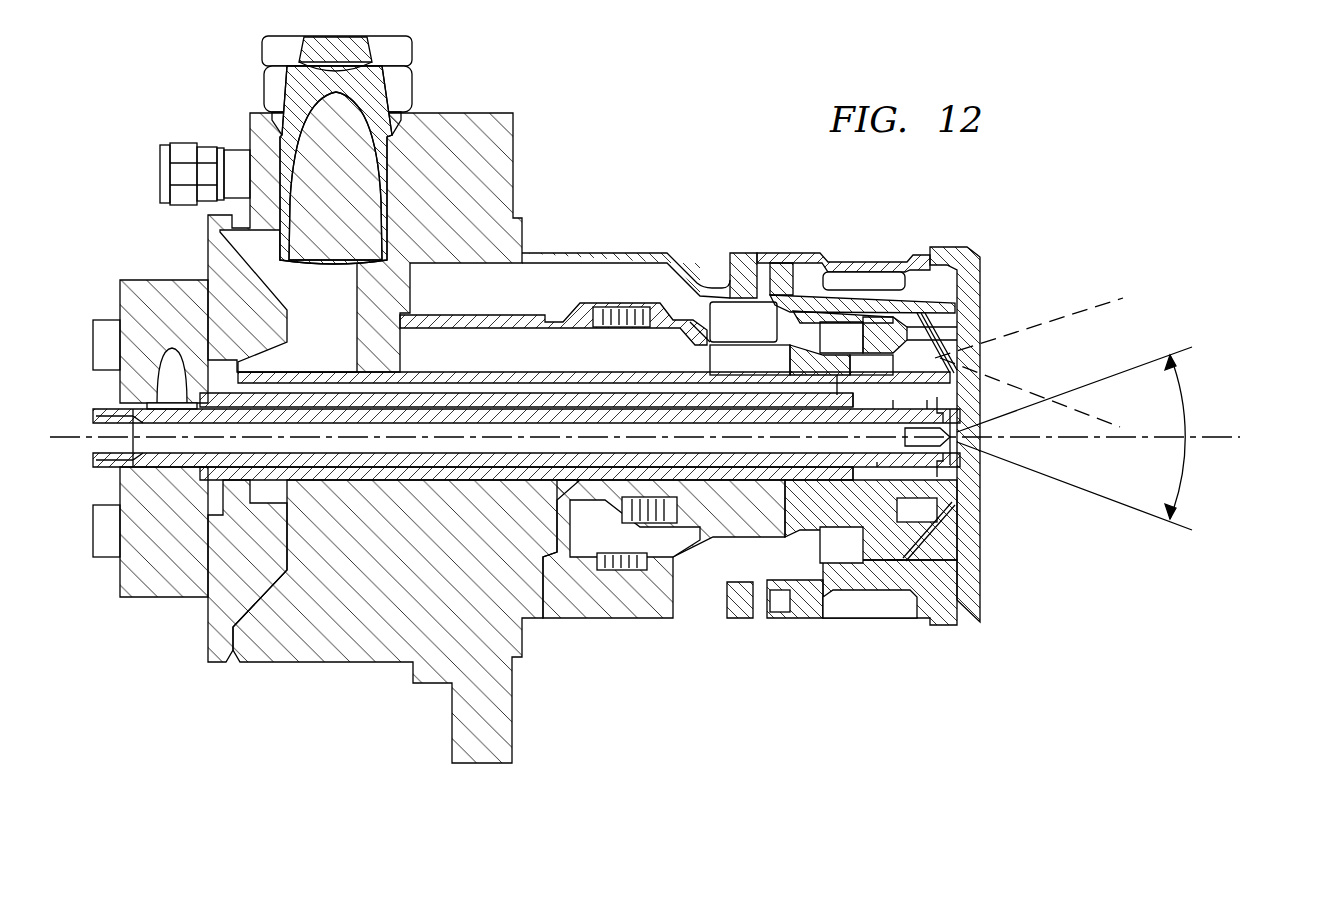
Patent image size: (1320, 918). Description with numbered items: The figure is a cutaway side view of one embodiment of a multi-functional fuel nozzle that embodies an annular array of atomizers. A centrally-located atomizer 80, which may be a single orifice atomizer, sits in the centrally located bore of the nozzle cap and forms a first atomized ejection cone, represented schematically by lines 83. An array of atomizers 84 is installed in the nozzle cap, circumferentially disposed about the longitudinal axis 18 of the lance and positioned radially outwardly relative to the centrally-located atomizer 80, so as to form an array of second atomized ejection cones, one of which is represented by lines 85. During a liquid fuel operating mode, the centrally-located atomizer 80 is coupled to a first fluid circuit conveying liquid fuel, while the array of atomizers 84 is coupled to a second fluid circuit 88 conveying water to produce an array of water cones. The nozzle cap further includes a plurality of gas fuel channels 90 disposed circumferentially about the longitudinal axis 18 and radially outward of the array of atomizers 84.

The longitudinal axis 18 is at (1265, 435).
The centrally-located atomizer 80 is at (907, 443).
The lines 83 is at (1186, 387).
The array of atomizers 84 is at (927, 357).
The lines 85 is at (1077, 308).
The second fluid circuit 88 is at (468, 352).
The gas fuel channels 90 is at (606, 277).